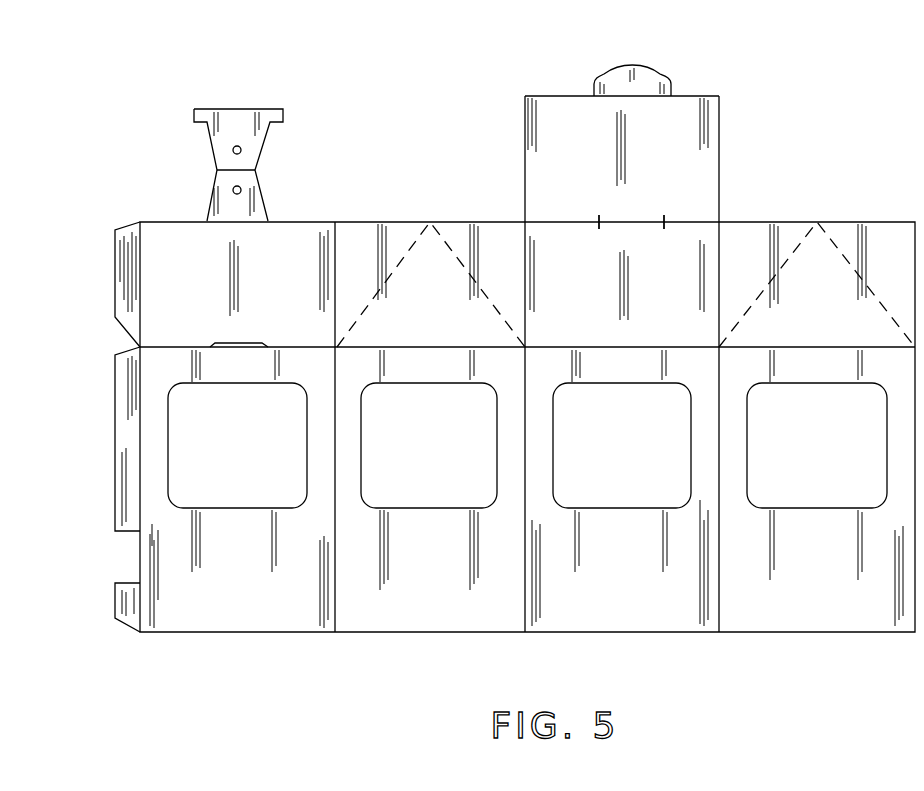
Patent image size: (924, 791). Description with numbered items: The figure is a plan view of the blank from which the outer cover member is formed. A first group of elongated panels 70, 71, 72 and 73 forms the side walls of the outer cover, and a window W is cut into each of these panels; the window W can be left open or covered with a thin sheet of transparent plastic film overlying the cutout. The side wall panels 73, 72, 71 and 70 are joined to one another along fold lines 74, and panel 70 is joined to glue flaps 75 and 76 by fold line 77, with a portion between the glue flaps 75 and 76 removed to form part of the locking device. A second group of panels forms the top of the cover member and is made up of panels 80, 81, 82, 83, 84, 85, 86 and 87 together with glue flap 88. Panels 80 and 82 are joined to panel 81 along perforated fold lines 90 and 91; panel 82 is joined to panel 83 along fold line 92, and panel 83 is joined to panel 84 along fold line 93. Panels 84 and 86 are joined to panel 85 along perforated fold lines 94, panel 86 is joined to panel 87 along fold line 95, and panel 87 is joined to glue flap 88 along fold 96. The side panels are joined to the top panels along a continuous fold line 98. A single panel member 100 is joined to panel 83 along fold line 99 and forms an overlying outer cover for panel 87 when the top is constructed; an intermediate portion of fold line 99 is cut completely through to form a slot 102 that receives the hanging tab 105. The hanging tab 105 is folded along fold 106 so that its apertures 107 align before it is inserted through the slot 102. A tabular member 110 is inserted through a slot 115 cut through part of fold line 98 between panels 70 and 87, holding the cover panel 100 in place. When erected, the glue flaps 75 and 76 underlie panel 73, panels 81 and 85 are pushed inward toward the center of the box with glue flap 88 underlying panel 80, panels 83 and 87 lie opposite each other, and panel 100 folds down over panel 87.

The elongated panel 70 is at (251, 574).
The elongated panel 71 is at (441, 574).
The elongated panel 72 is at (638, 574).
The elongated panel 73 is at (836, 574).
The fold lines 74 is at (338, 607).
The glue flap 75 is at (125, 437).
The glue flap 76 is at (130, 598).
The fold line 77 is at (145, 538).
The panel 80 is at (875, 259).
The panel 81 is at (803, 307).
The panel 82 is at (733, 259).
The panel 83 is at (636, 307).
The panel 84 is at (488, 259).
The panel 85 is at (410, 307).
The panel 86 is at (345, 259).
The panel 87 is at (250, 306).
The glue flap 88 is at (130, 297).
The perforated fold line 90 is at (892, 318).
The perforated fold line 91 is at (737, 321).
The fold line 92 is at (718, 318).
The fold line 93 is at (526, 320).
The perforated fold lines 94 is at (348, 322).
The fold line 95 is at (335, 320).
The fold line 96 is at (140, 323).
The continuous fold line 98 is at (290, 348).
The fold line 99 is at (583, 222).
The panel member 100 is at (676, 177).
The slot 102 is at (634, 222).
The hanging tab 105 is at (243, 118).
The fold 106 is at (257, 170).
The apertures 107 is at (232, 150).
The tabular member 110 is at (648, 75).
The slot 115 is at (243, 348).
The window W is at (245, 500).